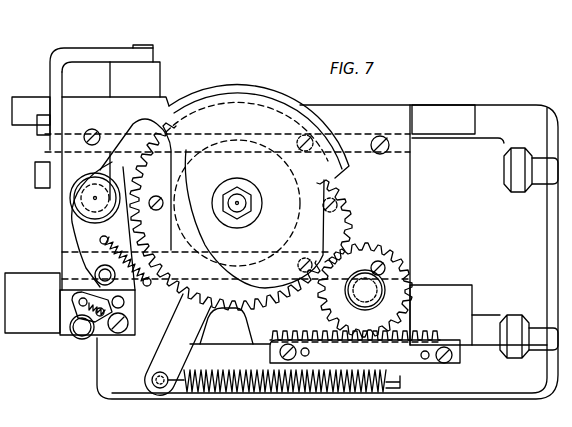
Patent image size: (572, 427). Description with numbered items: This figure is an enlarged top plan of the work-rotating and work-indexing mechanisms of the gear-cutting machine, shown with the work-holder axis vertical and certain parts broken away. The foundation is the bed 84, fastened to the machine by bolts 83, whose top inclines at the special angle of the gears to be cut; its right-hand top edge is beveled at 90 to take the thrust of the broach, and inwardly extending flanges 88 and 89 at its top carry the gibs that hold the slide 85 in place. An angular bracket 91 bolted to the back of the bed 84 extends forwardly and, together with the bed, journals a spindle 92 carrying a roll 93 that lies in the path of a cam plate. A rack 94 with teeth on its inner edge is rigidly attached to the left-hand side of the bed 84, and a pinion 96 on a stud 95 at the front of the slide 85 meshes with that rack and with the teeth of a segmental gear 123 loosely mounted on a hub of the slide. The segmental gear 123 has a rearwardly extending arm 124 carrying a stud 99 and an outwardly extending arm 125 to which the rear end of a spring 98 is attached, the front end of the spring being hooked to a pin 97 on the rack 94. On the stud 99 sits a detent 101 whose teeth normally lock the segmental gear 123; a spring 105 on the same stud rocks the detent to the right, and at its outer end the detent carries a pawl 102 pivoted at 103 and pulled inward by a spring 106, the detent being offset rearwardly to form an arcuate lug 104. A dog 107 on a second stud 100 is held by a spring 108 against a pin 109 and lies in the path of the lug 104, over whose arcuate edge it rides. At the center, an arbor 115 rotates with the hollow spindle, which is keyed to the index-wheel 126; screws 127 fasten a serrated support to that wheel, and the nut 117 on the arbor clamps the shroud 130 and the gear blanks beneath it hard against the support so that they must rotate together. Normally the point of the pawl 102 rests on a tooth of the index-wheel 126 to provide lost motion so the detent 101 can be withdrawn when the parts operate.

The bolts 83 is at (540, 180).
The bed 84 is at (301, 235).
The slide 85 is at (278, 136).
The flange 88 is at (459, 139).
The flange 89 is at (455, 315).
The beveled edge 90 is at (450, 115).
The angular bracket 91 is at (63, 61).
The spindle 92 is at (136, 49).
The roll 93 is at (152, 78).
The rack 94 is at (365, 347).
The stud 95 is at (365, 290).
The pinion 96 is at (402, 278).
The pin 97 is at (400, 380).
The spring 98 is at (212, 395).
The stud 99 is at (80, 202).
The stud 100 is at (82, 330).
The detent 101 is at (82, 238).
The pawl 102 is at (150, 286).
The pivot 103 is at (95, 274).
The arcuate lug 104 is at (75, 286).
The spring 105 is at (112, 162).
The spring 106 is at (125, 258).
The dog 107 is at (72, 312).
The spring 108 is at (70, 330).
The pin 109 is at (101, 315).
The arbor 115 is at (240, 203).
The nut 117 is at (238, 188).
The segmental gear 123 is at (230, 337).
The rearwardly extending arm 124 is at (62, 203).
The outwardly extending arm 125 is at (178, 344).
The index-wheel 126 is at (225, 216).
The screws 127 is at (156, 196).
The shroud 130 is at (249, 214).